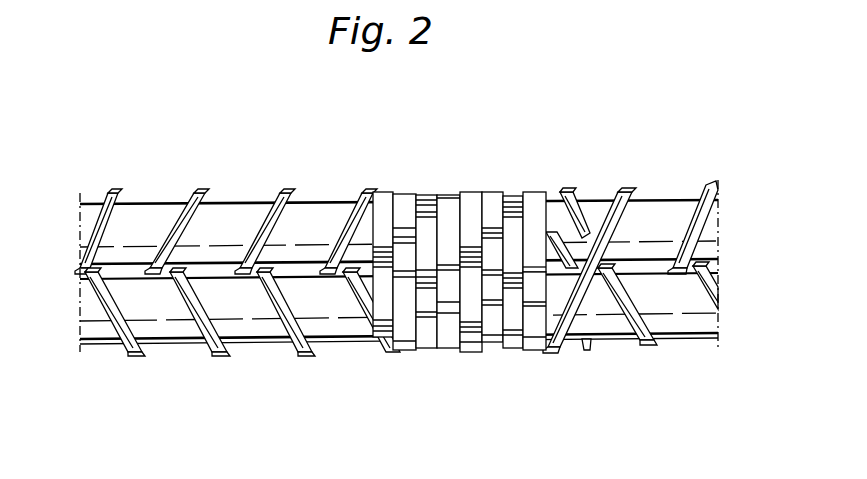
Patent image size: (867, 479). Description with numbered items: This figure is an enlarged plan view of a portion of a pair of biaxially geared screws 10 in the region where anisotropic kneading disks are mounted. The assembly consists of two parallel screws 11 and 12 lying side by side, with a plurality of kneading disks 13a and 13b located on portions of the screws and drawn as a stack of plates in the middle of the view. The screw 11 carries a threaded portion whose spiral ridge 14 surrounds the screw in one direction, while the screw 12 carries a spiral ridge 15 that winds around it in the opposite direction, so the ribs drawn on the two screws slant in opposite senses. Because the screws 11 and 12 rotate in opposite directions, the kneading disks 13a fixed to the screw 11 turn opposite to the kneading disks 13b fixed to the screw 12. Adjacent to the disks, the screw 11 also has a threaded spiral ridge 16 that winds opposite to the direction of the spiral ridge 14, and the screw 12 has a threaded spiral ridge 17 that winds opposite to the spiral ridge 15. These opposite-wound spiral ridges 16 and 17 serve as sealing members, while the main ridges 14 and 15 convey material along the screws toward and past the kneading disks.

The pair of biaxially geared screws 10 is at (427, 172).
The screw 11 is at (672, 207).
The screw 12 is at (695, 330).
The kneading disks 13a is at (533, 197).
The kneading disks 13b is at (535, 338).
The spiral ridge 14 is at (630, 193).
The spiral ridge 15 is at (643, 342).
The threaded spiral ridge 16 is at (577, 193).
The threaded spiral ridge 17 is at (563, 338).